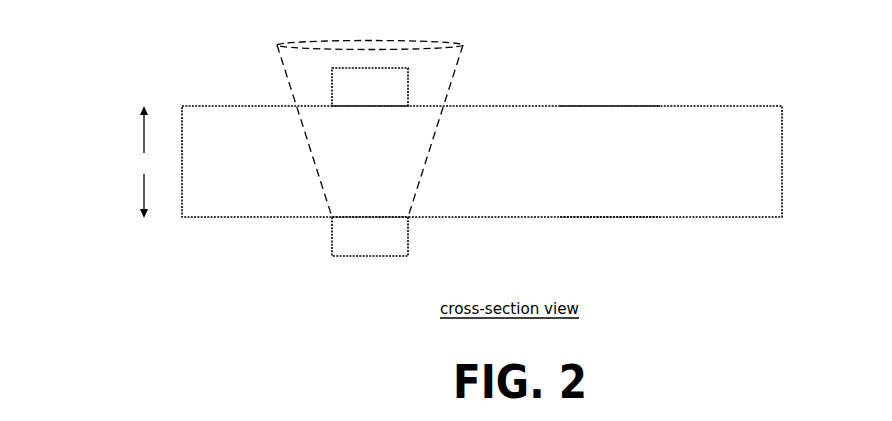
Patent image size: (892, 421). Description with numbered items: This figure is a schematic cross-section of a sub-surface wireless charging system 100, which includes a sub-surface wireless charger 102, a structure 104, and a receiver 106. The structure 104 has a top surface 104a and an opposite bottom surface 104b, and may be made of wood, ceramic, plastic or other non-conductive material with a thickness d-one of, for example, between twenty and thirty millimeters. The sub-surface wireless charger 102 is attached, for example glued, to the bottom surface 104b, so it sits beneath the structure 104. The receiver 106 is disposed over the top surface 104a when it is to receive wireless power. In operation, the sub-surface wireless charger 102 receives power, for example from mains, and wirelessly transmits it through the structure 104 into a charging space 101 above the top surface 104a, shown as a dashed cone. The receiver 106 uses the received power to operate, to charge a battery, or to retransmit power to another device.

The sub-surface wireless charging system 100 is at (88, 61).
The charging space 101 is at (459, 72).
The sub-surface wireless charger 102 is at (385, 246).
The structure 104 is at (497, 170).
The top surface 104a is at (607, 106).
The bottom surface 104b is at (617, 218).
The receiver 106 is at (385, 94).